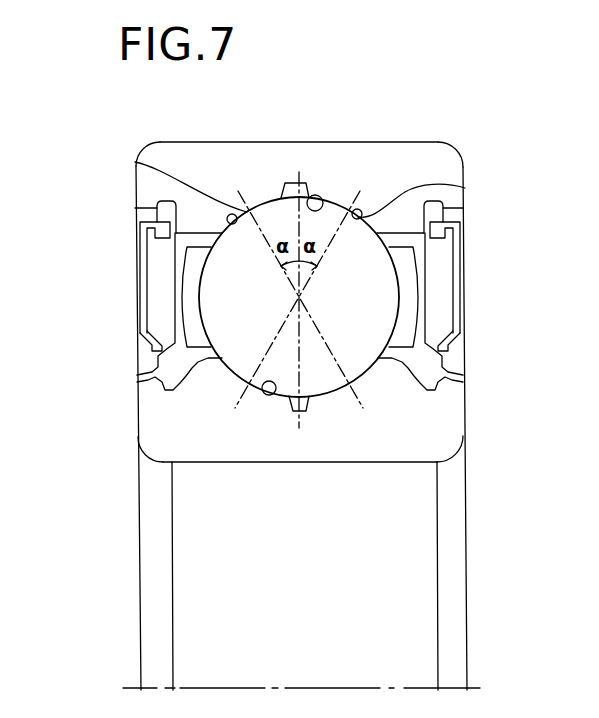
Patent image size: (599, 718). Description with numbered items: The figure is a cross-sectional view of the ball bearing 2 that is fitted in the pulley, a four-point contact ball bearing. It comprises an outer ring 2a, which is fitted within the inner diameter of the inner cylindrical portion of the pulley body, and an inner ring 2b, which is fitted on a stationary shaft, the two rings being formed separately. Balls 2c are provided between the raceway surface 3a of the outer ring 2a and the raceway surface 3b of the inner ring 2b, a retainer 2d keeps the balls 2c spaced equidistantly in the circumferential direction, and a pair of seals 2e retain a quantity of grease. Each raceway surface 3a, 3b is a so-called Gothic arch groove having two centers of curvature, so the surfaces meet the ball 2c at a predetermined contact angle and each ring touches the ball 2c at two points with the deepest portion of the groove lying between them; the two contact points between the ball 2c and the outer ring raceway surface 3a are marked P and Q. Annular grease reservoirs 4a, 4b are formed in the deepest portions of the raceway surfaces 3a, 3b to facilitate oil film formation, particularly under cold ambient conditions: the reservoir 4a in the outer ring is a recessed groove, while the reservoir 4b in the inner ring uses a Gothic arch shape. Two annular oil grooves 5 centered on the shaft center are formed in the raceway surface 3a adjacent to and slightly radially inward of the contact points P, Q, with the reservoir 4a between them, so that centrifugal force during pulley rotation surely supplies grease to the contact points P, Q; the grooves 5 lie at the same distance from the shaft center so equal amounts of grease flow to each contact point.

The ball bearing 2 is at (464, 158).
The outer ring 2a is at (196, 173).
The inner ring 2b is at (162, 419).
The ball 2c is at (340, 333).
The retainer 2d is at (403, 278).
The seal 2e is at (445, 317).
The raceway surface of the outer ring 3a is at (325, 192).
The raceway surface of the inner ring 3b is at (264, 396).
The grease reservoir 4a is at (305, 183).
The grease reservoir 4b is at (295, 401).
The oil groove 5 is at (135, 162).
The contact point P is at (247, 210).
The contact point Q is at (352, 210).